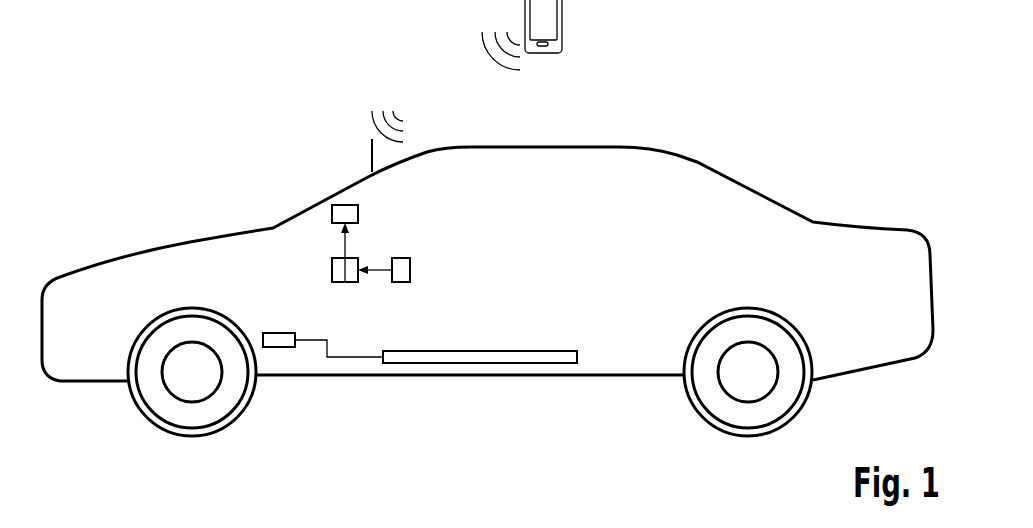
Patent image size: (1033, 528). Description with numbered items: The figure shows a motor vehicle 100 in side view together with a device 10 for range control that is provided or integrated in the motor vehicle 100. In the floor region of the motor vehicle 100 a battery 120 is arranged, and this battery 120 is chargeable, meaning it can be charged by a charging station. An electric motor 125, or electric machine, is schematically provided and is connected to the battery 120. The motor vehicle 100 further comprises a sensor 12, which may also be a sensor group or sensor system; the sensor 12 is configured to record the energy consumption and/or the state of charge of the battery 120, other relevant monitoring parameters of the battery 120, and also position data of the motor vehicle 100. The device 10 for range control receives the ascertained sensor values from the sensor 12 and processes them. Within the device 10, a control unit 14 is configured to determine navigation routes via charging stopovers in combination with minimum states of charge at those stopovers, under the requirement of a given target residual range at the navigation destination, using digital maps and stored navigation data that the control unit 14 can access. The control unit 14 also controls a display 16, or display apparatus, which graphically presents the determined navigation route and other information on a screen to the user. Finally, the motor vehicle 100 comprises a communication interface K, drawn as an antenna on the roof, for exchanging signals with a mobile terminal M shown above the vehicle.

The motor vehicle 100 is at (800, 102).
The communication interface K is at (372, 150).
The mobile terminal M is at (562, 17).
The device for range control 10 is at (380, 238).
The display 16 is at (332, 215).
The control unit 14 is at (343, 282).
The sensor 12 is at (410, 267).
The electric motor 125 is at (278, 347).
The battery 120 is at (497, 363).